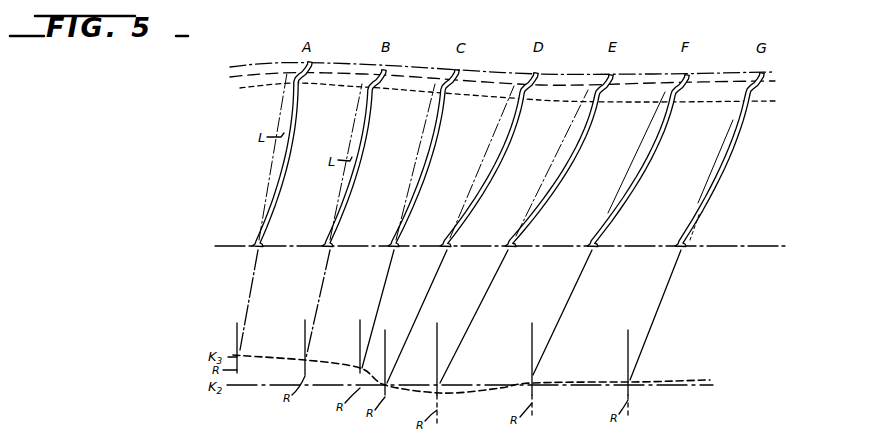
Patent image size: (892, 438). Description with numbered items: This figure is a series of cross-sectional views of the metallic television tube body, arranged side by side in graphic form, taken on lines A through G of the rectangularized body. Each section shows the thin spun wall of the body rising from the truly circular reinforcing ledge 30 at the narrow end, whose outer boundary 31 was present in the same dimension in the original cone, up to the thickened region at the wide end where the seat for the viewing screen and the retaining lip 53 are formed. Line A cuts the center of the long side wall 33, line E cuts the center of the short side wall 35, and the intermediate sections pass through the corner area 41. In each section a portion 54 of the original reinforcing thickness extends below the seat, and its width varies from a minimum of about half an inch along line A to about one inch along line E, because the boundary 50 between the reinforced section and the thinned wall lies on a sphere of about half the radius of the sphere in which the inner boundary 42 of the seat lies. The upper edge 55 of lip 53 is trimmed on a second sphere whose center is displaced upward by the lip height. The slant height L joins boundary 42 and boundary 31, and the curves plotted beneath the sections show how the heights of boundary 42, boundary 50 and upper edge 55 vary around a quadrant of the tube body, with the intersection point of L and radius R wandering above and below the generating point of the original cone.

The reinforcing ledge 30 is at (256, 242).
The outer boundary of reinforcement 31 is at (264, 245).
The long side wall 33 is at (298, 135).
The short side wall 35 is at (733, 150).
The corner area 41 is at (508, 137).
The inner boundary of seat 42 is at (230, 78).
The boundary between reinforced section and thinned wall 50 is at (235, 91).
The retaining lip 53 is at (387, 77).
The reinforcement portion below seat 54 is at (610, 93).
The upper edge of lip 55 is at (223, 68).